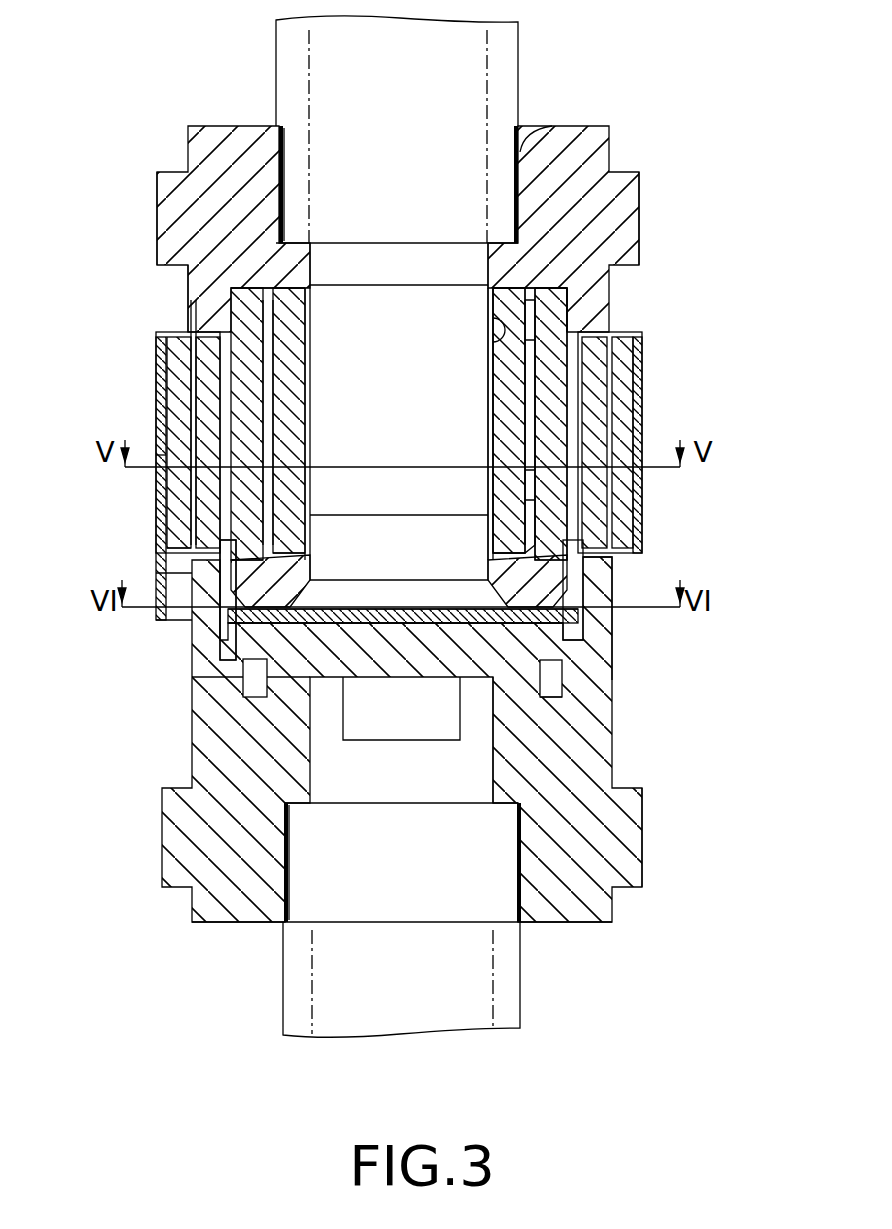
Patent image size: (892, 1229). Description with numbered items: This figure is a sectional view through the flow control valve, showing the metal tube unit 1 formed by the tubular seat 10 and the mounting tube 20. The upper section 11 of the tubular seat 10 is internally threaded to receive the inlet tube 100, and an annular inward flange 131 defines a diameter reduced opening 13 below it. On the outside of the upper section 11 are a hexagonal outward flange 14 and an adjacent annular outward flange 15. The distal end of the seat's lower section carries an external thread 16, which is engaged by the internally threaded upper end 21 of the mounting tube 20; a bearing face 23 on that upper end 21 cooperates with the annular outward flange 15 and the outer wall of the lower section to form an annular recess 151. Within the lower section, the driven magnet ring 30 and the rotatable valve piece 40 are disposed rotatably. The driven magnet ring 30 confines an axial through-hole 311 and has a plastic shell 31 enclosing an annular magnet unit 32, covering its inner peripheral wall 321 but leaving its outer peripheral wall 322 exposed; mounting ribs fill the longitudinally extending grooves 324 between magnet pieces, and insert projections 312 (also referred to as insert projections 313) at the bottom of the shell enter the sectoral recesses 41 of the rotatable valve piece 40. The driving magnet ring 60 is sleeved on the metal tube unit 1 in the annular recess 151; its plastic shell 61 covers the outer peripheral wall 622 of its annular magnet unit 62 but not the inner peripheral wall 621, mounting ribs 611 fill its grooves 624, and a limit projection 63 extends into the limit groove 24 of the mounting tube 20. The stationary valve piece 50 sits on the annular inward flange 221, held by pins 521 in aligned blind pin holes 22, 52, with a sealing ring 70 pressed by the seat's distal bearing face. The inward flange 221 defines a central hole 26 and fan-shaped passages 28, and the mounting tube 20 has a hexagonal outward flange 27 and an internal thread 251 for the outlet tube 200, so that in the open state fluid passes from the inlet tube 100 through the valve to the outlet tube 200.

The inlet tube 100 is at (519, 100).
The tubular seat 10 is at (611, 153).
The upper section 11 is at (522, 150).
The diameter reduced opening 13 is at (372, 260).
The annular inward flange 131 is at (297, 250).
The hexagonal outward flange 14 is at (641, 212).
The annular outward flange 15 is at (196, 283).
The annular recess 151 is at (192, 332).
The driven magnet ring 30 is at (580, 308).
The plastic shell 31 is at (575, 276).
The annular magnet unit 32 is at (560, 345).
The axial through-hole 311 is at (530, 380).
The insert projections 312 is at (560, 496).
The insert projections 313 is at (462, 600).
The inner peripheral wall 321 is at (495, 336).
The outer peripheral wall 322 is at (552, 322).
The longitudinally extending groove 324 is at (585, 448).
The metal tube unit 1 is at (556, 303).
The driving magnet ring 60 is at (157, 358).
The plastic shell 61 is at (160, 382).
The annular magnet unit 62 is at (176, 424).
The mounting ribs 611 is at (168, 456).
The inner peripheral wall 621 is at (172, 526).
The outer peripheral wall 622 is at (200, 490).
The longitudinally extending groove 624 is at (192, 504).
The limit groove 24 is at (155, 576).
The limit projection 63 is at (166, 614).
The rotatable valve piece 40 is at (397, 604).
The sectoral recesses 41 is at (353, 605).
The external thread 16 is at (228, 652).
The internally threaded upper end 21 is at (228, 600).
The mounting tube 20 is at (614, 764).
The blind pin holes 22 is at (300, 732).
The annular inward flange 221 is at (292, 700).
The bearing face 23 is at (602, 594).
The hexagonal outward flange 27 is at (643, 848).
The central hole 26 is at (332, 784).
The internal thread 251 is at (245, 918).
The fan-shaped passages 28 is at (442, 732).
The stationary valve piece 50 is at (404, 684).
The sealing ring 70 is at (243, 670).
The blind pin holes 52 is at (563, 672).
The pins 521 is at (548, 690).
The outlet tube 200 is at (282, 977).